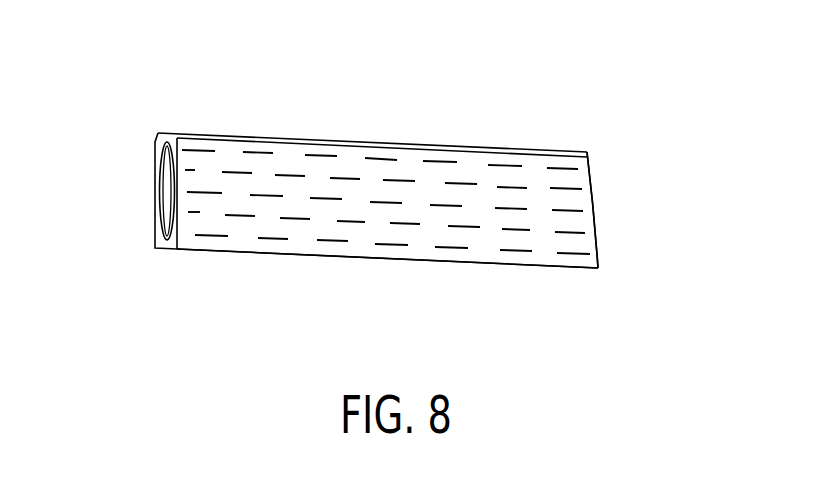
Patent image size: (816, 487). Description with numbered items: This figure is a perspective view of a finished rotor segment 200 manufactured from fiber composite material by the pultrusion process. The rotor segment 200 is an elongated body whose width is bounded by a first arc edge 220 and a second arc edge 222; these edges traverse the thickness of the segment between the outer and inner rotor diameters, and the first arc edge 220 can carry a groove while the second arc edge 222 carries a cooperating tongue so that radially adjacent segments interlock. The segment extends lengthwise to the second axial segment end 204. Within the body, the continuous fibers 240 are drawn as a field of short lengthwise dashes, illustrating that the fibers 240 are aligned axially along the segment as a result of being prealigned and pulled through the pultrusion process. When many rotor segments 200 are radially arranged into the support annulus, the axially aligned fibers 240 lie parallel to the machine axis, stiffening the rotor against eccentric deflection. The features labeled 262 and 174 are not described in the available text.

The rotor segment 200 is at (455, 77).
The second arc edge 222 is at (364, 143).
The first arc edge 220 is at (370, 260).
The second axial segment end 204 is at (597, 212).
The end cap 262 is at (158, 162).
The opening 174 is at (168, 192).
The continuous fibers 240 is at (287, 173).